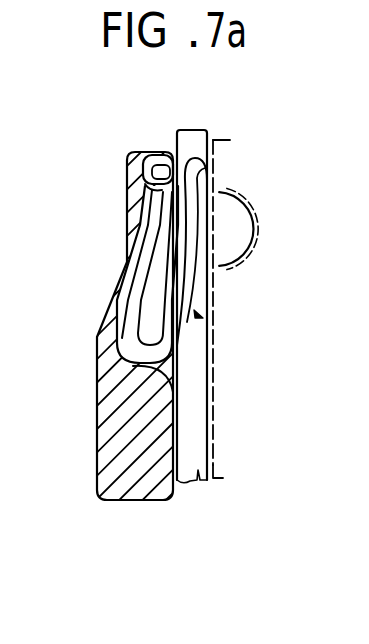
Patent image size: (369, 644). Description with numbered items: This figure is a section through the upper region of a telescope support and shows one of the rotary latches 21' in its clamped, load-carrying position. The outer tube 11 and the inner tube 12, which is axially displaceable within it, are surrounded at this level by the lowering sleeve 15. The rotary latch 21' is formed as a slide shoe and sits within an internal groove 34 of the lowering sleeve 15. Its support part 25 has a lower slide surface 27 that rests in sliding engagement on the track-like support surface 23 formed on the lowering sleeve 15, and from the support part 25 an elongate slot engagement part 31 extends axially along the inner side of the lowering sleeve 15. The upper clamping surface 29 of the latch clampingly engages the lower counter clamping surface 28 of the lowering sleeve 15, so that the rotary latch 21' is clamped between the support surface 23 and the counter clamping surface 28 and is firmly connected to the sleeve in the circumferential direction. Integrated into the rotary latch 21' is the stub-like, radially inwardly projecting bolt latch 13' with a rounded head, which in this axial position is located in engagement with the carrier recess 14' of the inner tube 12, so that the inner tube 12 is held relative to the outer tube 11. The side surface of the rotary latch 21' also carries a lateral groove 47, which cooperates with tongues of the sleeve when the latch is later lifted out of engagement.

The outer tube 11 is at (202, 484).
The inner tube 12 is at (213, 440).
The bolt latch 13' is at (269, 227).
The carrier recess 14' is at (280, 234).
The lowering sleeve 15 is at (110, 440).
The rotary latch 21' is at (235, 256).
The support surface 23 is at (175, 389).
The support part 25 is at (192, 288).
The slide surface 27 is at (180, 357).
The counter clamping surface 28 is at (146, 186).
The clamping surface 29 is at (145, 201).
The elongate slot engagement part 31 is at (207, 170).
The internal groove 34 is at (120, 292).
The lateral groove 47 is at (138, 244).